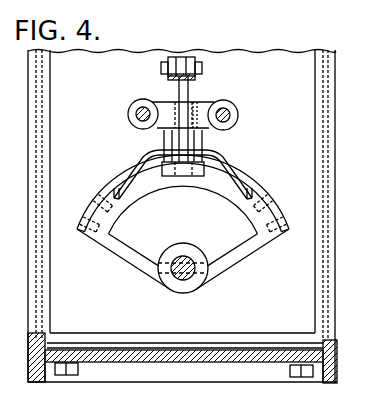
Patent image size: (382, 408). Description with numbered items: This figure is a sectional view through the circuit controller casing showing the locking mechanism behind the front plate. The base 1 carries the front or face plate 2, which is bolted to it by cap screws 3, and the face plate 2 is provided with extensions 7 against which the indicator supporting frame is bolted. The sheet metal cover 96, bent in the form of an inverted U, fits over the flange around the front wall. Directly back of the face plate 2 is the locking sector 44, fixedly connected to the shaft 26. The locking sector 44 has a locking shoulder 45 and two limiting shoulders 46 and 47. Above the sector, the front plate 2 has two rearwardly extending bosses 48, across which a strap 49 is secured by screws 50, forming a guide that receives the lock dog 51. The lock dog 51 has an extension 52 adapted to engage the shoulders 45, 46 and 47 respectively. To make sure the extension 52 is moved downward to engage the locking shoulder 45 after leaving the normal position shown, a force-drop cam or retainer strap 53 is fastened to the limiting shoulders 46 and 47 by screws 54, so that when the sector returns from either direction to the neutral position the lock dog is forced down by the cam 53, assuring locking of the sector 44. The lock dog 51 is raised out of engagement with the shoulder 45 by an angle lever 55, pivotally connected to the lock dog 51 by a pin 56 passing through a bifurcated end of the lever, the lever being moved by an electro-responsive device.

The base 1 is at (337, 360).
The front or face plate 2 is at (303, 303).
The cap screws 3 is at (78, 375).
The extensions 7 is at (47, 113).
The shaft 26 is at (185, 275).
The locking sector 44 is at (107, 243).
The locking shoulder 45 is at (203, 165).
The limiting shoulder 46 is at (255, 195).
The limiting shoulder 47 is at (113, 195).
The bosses 48 is at (163, 110).
The strap 49 is at (200, 105).
The screws 50 is at (128, 114).
The lock dog 51 is at (183, 90).
The extension 52 is at (183, 165).
The strap (force-drop cam or retainer) 53 is at (142, 152).
The screws 54 is at (116, 212).
The angle lever 55 is at (190, 57).
The pin 56 is at (163, 72).
The cover 96 is at (330, 140).